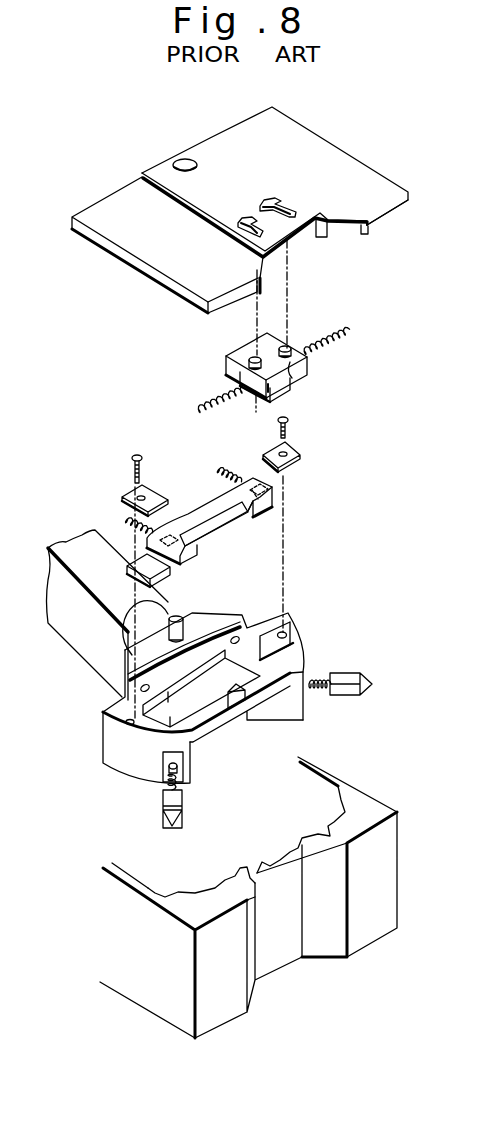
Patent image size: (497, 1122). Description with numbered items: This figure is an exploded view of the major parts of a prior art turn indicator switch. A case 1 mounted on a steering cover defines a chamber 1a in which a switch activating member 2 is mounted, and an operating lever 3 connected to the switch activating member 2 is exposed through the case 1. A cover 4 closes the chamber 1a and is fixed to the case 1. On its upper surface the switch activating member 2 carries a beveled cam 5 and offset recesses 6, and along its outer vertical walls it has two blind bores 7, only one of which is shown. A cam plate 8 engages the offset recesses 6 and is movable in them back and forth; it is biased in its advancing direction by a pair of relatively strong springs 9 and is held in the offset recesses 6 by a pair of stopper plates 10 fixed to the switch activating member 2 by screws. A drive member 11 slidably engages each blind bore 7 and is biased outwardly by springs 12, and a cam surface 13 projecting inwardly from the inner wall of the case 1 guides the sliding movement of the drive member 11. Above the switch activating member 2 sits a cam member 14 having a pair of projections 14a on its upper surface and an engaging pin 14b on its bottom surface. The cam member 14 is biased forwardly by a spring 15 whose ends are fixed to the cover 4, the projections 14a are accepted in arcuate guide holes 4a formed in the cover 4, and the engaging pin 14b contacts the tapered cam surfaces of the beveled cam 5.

The case 1 is at (398, 882).
The chamber 1a is at (313, 780).
The switch activating member 2 is at (102, 745).
The operating lever 3 is at (68, 626).
The cover 4 is at (116, 192).
The arcuate guide holes 4a is at (277, 198).
The beveled cam 5 is at (236, 710).
The offset recesses 6 is at (272, 666).
The blind bores 7 is at (184, 762).
The cam plate 8 is at (288, 497).
The springs 9 is at (126, 519).
The stopper plates 10 is at (165, 477).
The drive member 11 is at (352, 672).
The springs 12 is at (318, 700).
The cam surface 13 is at (168, 888).
The cam member 14 is at (306, 378).
The projections 14a is at (290, 346).
The engaging pin 14b is at (258, 394).
The spring 15 is at (214, 400).